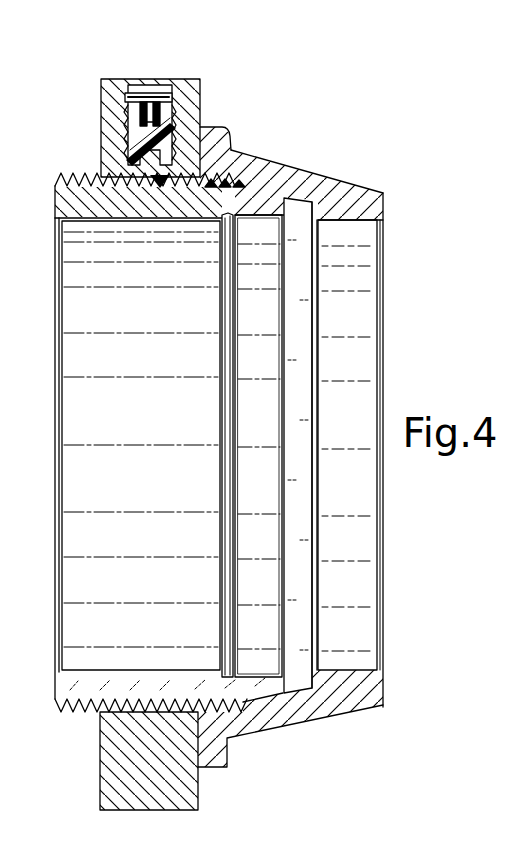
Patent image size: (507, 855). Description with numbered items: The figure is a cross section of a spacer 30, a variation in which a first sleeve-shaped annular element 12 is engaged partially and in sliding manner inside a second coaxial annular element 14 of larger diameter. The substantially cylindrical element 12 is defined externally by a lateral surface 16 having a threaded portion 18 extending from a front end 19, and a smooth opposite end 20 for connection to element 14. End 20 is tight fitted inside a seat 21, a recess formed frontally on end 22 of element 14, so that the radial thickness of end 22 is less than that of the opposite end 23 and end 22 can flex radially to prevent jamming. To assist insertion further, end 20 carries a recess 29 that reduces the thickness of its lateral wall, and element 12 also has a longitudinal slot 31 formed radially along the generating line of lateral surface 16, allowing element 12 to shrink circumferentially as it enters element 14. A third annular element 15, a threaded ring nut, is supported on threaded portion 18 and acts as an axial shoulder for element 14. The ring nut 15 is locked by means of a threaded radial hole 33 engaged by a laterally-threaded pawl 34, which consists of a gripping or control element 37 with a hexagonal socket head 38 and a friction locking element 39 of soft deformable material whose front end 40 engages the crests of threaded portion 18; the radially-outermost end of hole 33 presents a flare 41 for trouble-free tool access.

The first annular element 12 is at (128, 206).
The second annular element 14 is at (299, 211).
The third annular element 15 is at (122, 753).
The lateral surface 16 is at (247, 182).
The threaded portion 18 is at (70, 171).
The front end 19 is at (52, 688).
The end 20 is at (228, 218).
The seat 21 is at (282, 200).
The end 22 is at (250, 717).
The opposite end 23 is at (372, 688).
The recess 29 is at (258, 676).
The spacer 30 is at (322, 148).
The longitudinal slot 31 is at (164, 688).
The threaded radial hole 33 is at (175, 103).
The laterally-threaded pawl 34 is at (143, 84).
The gripping or control element 37 is at (198, 128).
The hexagonal socket head 38 is at (172, 82).
The friction locking element 39 is at (130, 152).
The front end 40 is at (160, 190).
The flare 41 is at (130, 83).